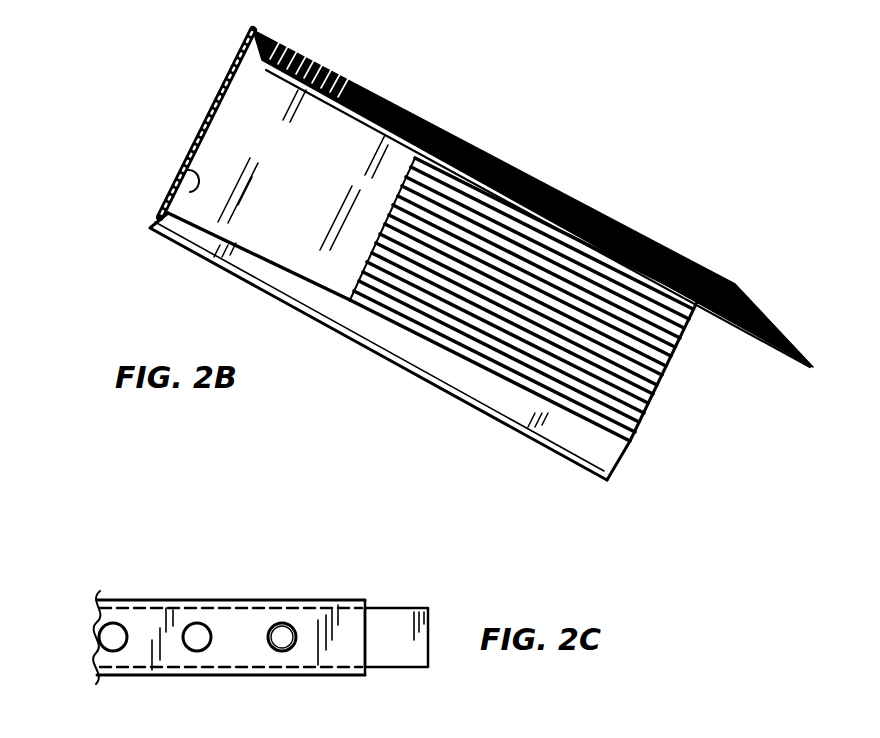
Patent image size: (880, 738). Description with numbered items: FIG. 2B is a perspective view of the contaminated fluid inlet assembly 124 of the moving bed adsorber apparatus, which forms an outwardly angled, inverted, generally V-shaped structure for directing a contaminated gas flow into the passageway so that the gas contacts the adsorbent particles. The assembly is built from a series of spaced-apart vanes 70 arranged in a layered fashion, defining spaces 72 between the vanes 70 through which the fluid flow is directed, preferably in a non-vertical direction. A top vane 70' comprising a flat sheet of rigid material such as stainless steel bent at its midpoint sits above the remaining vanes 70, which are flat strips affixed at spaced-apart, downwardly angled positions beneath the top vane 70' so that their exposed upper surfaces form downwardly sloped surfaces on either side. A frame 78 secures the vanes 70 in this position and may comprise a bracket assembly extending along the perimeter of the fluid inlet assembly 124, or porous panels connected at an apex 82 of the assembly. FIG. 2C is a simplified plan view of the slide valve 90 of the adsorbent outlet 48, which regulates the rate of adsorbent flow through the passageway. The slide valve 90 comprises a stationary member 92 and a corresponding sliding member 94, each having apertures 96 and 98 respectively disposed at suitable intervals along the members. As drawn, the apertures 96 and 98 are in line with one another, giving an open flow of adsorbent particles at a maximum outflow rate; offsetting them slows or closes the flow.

In FIG. 2B, the contaminated fluid inlet assembly 124 is at (688, 236).
In FIG. 2B, the top vane 70' is at (265, 165).
In FIG. 2B, the frame 78 is at (180, 140).
In FIG. 2B, the apex 82 is at (197, 90).
In FIG. 2B, the vanes 70 is at (424, 340).
In FIG. 2B, the spaces 72 is at (637, 444).
In FIG. 2C, the adsorbent outlet 48 is at (278, 582).
In FIG. 2C, the slide valve 90 is at (196, 602).
In FIG. 2C, the stationary member 92 is at (150, 622).
In FIG. 2C, the apertures 96 is at (297, 632).
In FIG. 2C, the apertures 98 is at (292, 645).
In FIG. 2C, the sliding member 94 is at (390, 622).